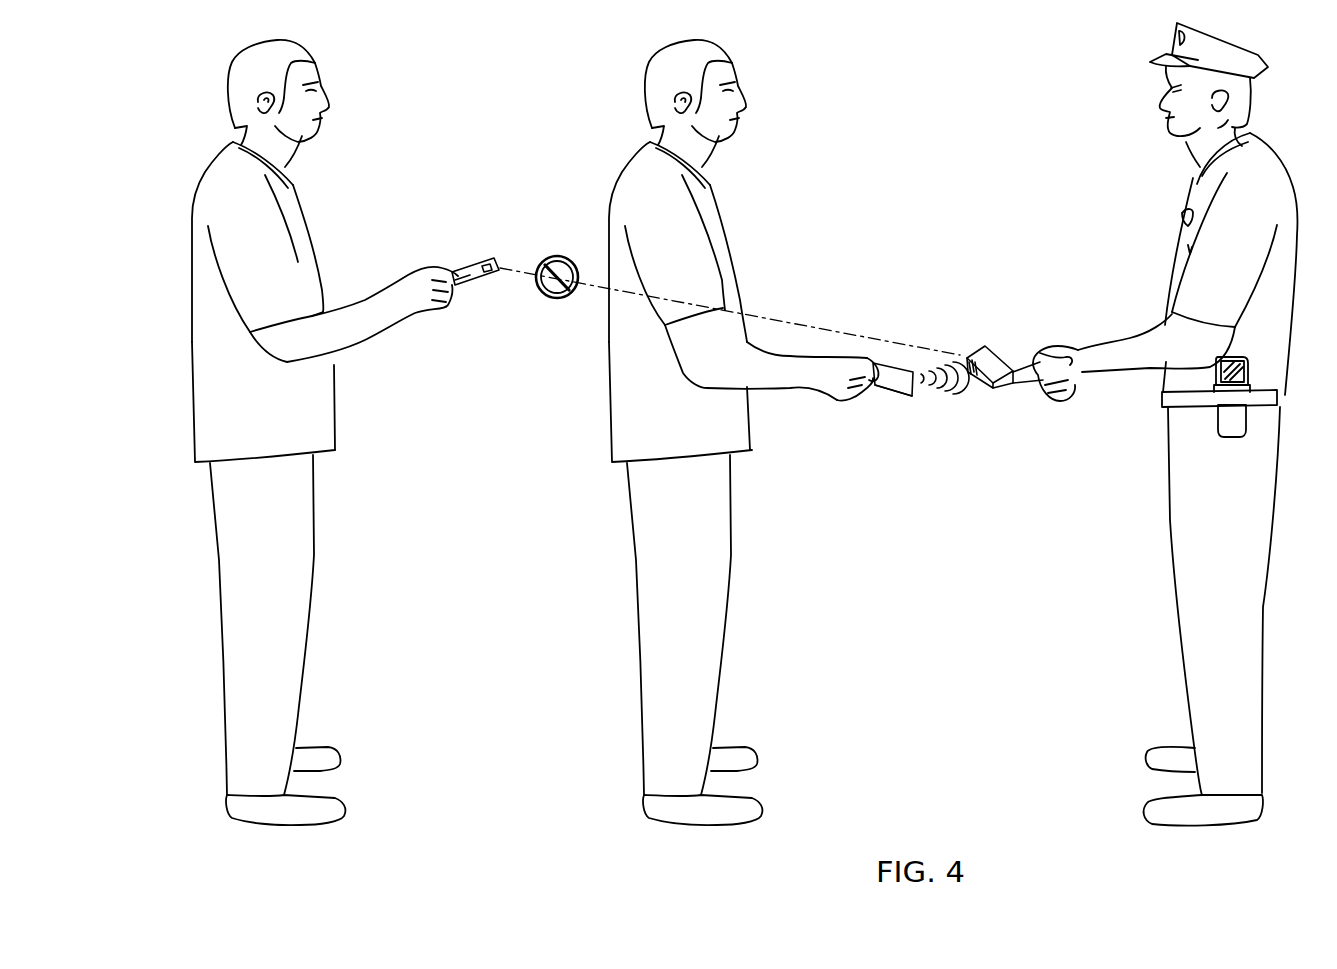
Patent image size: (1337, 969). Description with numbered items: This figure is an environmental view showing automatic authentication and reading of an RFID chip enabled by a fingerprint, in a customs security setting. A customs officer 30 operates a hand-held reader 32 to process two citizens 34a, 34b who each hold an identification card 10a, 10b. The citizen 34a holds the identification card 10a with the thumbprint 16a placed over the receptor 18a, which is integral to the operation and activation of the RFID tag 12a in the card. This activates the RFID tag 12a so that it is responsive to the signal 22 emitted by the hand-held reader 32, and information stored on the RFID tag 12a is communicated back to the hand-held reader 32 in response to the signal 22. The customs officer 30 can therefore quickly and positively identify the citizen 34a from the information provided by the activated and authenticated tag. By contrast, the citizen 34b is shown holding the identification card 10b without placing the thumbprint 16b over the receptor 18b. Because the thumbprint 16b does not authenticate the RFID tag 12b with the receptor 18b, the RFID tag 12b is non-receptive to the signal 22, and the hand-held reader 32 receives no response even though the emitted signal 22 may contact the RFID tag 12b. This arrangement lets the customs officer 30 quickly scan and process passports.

The identification card 10a is at (899, 366).
The identification card 10b is at (478, 268).
The RFID tag 12a is at (878, 382).
The RFID tag 12b is at (488, 262).
The thumbprint 16a is at (893, 390).
The thumbprint 16b is at (455, 284).
The receptor 18a is at (893, 390).
The receptor 18b is at (487, 268).
The signal 22 is at (945, 386).
The customs officer 30 is at (1268, 168).
The hand-held reader 32 is at (990, 357).
The citizen 34a is at (629, 177).
The citizen 34b is at (215, 177).